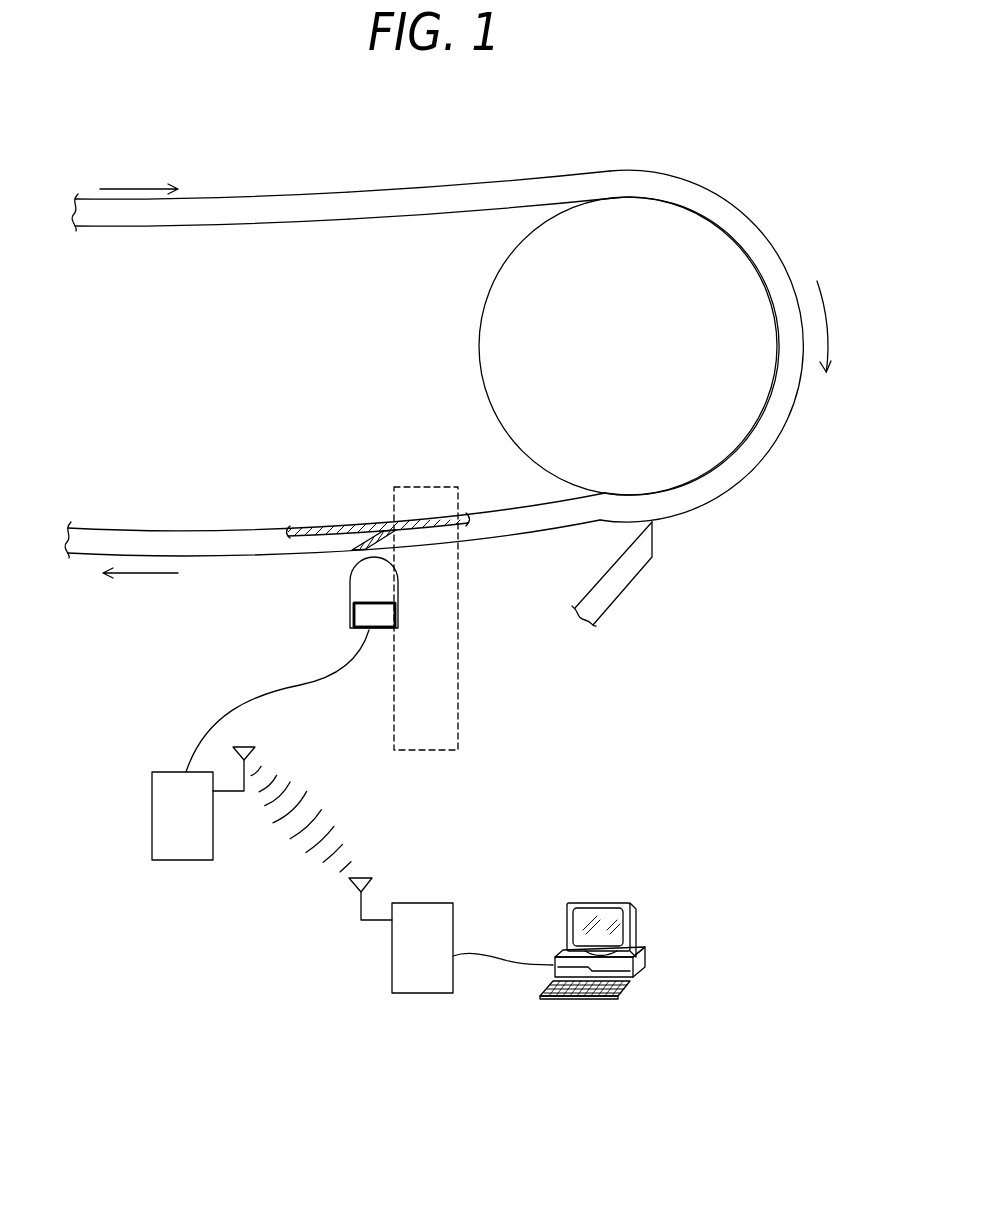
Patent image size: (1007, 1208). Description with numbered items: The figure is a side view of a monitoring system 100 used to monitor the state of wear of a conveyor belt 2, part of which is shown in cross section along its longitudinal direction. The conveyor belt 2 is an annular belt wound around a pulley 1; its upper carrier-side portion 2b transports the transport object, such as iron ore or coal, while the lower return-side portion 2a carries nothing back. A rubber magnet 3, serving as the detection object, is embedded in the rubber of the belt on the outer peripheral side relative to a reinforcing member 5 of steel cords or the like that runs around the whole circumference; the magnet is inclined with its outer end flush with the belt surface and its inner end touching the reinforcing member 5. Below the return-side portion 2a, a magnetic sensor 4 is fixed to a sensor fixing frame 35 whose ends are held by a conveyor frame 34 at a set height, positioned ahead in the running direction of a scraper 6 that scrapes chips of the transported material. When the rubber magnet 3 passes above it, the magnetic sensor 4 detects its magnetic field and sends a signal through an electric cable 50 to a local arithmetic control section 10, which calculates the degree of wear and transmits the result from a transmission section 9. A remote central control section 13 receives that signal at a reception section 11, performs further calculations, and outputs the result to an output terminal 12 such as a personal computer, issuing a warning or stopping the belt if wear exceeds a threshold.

The monitoring system 100 is at (533, 145).
The pulley 1 is at (525, 325).
The conveyor belt 2 is at (297, 195).
The return-side portion 2a is at (206, 528).
The carrier-side portion 2b is at (406, 190).
The rubber magnet 3 is at (360, 540).
The magnetic sensor 4 is at (338, 601).
The reinforcing member 5 is at (334, 527).
The scraper 6 is at (622, 583).
The transmission section 9 is at (256, 750).
The local arithmetic control section 10 is at (182, 862).
The reception section 11 is at (372, 880).
The output terminal 12 is at (603, 903).
The central control section 13 is at (422, 995).
The conveyor frame 34 is at (460, 650).
The sensor fixing frame 35 is at (375, 630).
The electric cable 50 is at (257, 695).